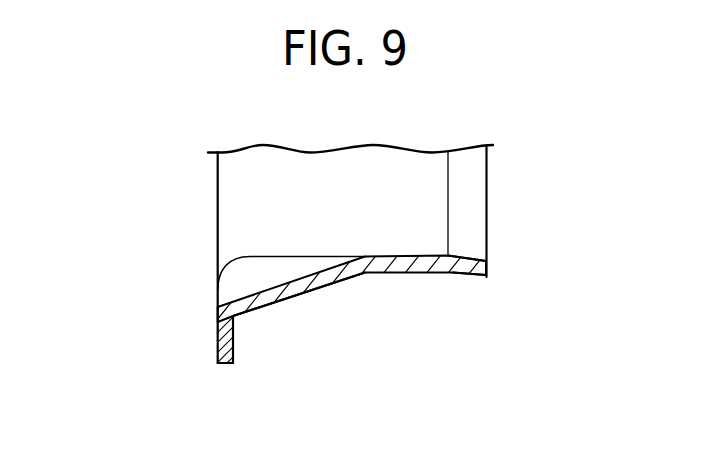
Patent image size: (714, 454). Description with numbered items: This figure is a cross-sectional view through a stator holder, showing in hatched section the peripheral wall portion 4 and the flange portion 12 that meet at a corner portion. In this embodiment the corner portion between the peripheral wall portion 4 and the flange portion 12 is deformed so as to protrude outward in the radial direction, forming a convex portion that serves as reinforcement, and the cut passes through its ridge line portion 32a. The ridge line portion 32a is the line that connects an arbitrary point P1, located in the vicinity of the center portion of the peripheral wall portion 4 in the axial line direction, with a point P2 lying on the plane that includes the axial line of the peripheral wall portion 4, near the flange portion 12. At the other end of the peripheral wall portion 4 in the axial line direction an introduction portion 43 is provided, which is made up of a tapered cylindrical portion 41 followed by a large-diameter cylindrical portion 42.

The flange portion 12 is at (218, 333).
The peripheral wall portion 4 is at (410, 268).
The ridge line portion 32a is at (302, 290).
The point P1 is at (372, 266).
The point P2 is at (233, 312).
The tapered cylindrical portion 41 is at (459, 268).
The large-diameter cylindrical portion 42 is at (484, 275).
The introduction portion 43 is at (548, 357).